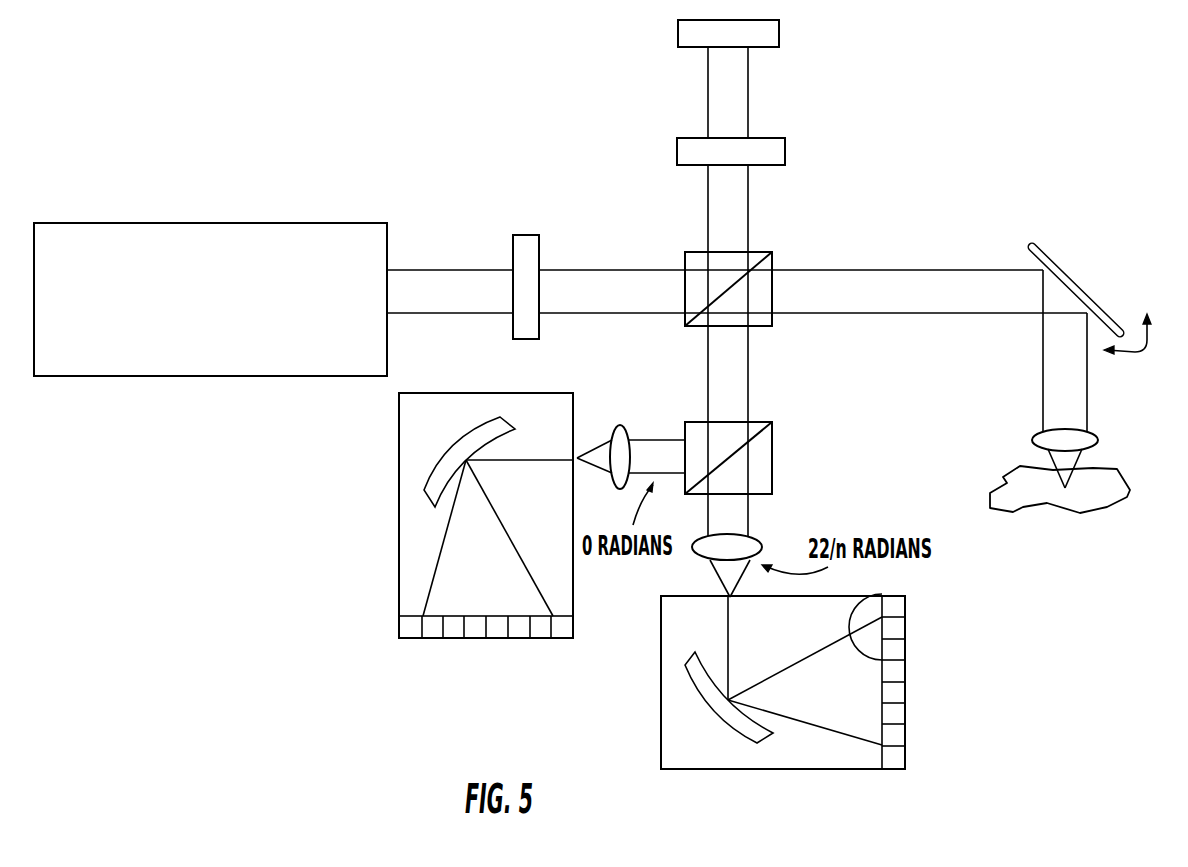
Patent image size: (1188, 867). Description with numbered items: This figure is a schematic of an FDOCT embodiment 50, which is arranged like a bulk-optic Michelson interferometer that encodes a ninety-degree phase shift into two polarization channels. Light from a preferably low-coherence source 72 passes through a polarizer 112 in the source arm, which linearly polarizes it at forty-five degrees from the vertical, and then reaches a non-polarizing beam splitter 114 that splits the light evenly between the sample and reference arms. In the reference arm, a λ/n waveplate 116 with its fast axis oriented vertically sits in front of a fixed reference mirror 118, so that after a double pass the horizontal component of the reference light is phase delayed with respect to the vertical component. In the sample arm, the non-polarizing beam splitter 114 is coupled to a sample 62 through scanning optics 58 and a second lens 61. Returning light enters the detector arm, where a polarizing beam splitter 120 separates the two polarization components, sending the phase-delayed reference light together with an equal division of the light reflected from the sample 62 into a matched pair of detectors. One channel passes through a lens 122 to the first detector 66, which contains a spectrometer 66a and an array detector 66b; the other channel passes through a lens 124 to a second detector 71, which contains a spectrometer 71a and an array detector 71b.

The FDOCT embodiment 50 is at (144, 99).
The source 72 is at (80, 222).
The polarizer 112 is at (527, 235).
The non-polarizing beam splitter 114 is at (685, 258).
The λ/n waveplate 116 is at (677, 152).
The fixed reference mirror 118 is at (678, 30).
The polarizing beam splitter 120 is at (773, 462).
The lens 122 is at (758, 535).
The lens 124 is at (620, 426).
The detector module 71 is at (446, 515).
The spectrometer 71a is at (473, 438).
The array detector 71b is at (452, 613).
The first detector 66 is at (825, 698).
The spectrometer 66a is at (737, 725).
The array detector 66b is at (862, 596).
The scanning optics 58 is at (1058, 262).
The second lens 61 is at (1092, 435).
The sample 62 is at (1105, 508).